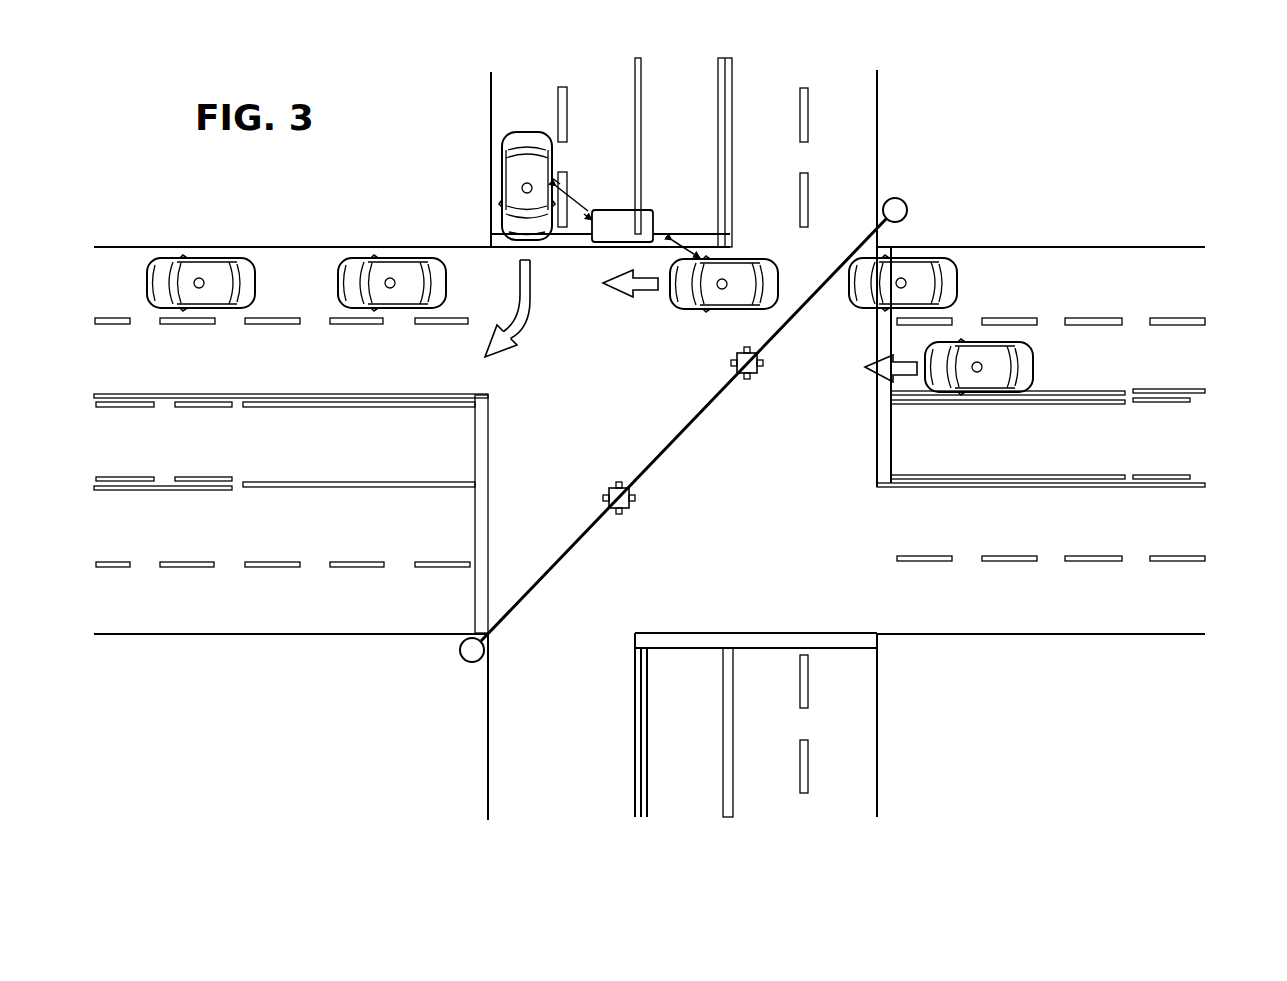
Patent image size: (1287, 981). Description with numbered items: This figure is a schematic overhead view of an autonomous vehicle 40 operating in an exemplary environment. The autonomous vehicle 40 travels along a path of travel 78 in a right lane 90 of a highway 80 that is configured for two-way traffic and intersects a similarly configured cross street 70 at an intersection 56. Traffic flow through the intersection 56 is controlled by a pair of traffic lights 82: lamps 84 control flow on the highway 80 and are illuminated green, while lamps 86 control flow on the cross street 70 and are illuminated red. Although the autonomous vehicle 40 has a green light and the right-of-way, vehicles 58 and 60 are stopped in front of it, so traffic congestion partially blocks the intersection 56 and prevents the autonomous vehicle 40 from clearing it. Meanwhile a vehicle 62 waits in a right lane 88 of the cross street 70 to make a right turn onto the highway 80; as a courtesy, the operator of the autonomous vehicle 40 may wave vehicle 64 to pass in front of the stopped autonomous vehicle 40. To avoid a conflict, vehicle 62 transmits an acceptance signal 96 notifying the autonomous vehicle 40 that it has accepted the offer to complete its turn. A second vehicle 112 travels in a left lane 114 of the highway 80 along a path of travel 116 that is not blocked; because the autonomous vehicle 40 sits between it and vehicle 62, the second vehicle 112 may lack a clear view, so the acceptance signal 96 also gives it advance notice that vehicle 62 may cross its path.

The cross street 70 is at (475, 63).
The right lane 88 is at (509, 93).
The vehicle 62 is at (502, 158).
The acceptance signal 96 is at (615, 210).
The vehicle 58 is at (235, 262).
The vehicle 60 is at (385, 262).
The autonomous vehicle 40 is at (778, 268).
The lamps 86 is at (749, 347).
The lamps 84 is at (731, 363).
The traffic lights 82 is at (760, 372).
The intersection 56 is at (772, 511).
The vehicle 64 is at (530, 312).
The path of travel 78 is at (640, 296).
The right lane 90 is at (1092, 291).
The second vehicle 112 is at (1040, 372).
The left lane 114 is at (1158, 369).
The path of travel 116 is at (912, 380).
The highway 80 is at (1215, 237).